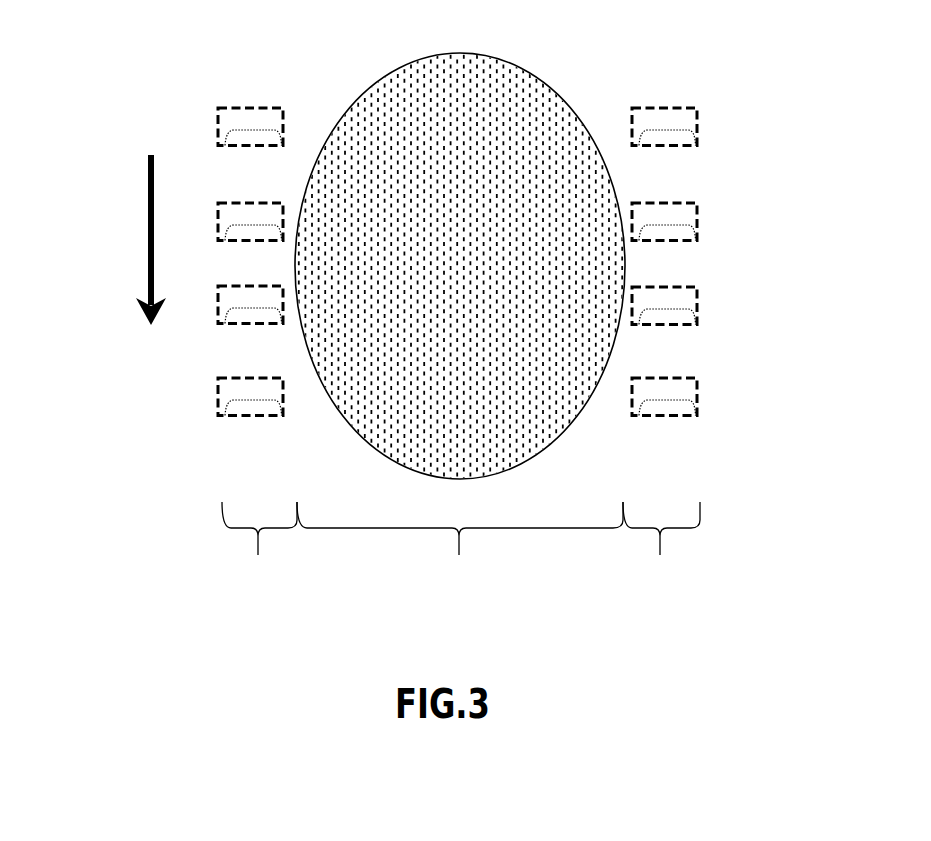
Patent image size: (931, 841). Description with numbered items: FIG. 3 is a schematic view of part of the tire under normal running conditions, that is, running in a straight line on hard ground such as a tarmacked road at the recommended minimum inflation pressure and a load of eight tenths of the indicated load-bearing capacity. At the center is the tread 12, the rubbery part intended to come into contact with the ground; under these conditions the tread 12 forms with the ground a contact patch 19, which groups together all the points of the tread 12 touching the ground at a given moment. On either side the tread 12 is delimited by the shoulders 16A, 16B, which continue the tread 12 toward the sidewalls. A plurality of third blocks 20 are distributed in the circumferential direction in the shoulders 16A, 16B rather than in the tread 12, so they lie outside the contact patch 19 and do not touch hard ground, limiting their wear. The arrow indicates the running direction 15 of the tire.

The tread 12 is at (463, 317).
The running direction 15 is at (151, 255).
The shoulder 16A is at (257, 361).
The shoulder 16B is at (724, 361).
The contact patch 19 is at (585, 128).
The third block 20 is at (699, 311).